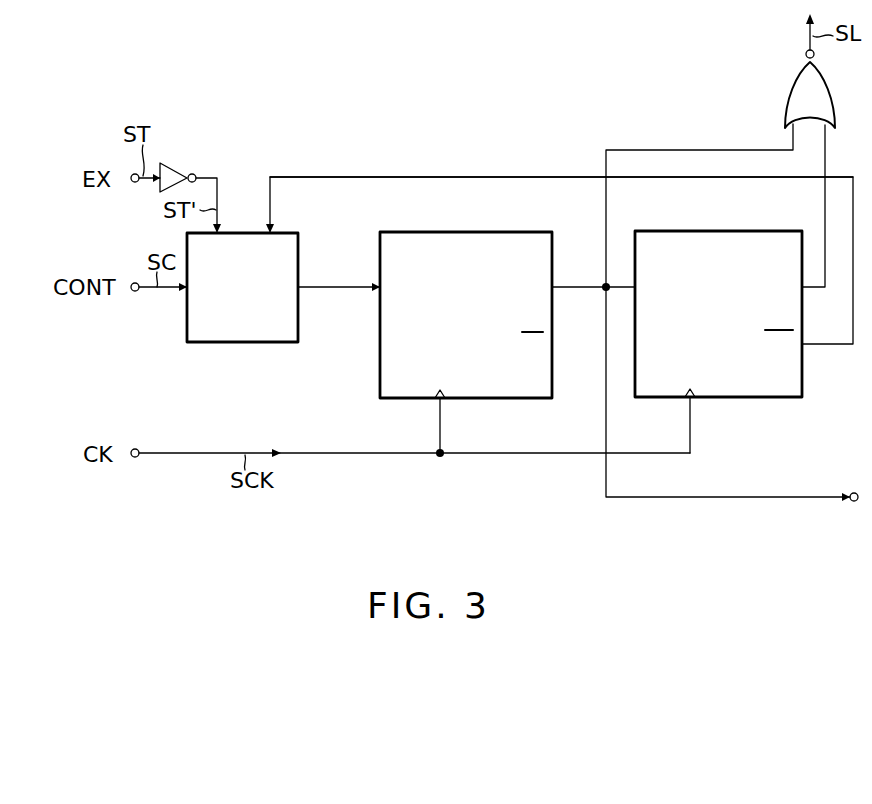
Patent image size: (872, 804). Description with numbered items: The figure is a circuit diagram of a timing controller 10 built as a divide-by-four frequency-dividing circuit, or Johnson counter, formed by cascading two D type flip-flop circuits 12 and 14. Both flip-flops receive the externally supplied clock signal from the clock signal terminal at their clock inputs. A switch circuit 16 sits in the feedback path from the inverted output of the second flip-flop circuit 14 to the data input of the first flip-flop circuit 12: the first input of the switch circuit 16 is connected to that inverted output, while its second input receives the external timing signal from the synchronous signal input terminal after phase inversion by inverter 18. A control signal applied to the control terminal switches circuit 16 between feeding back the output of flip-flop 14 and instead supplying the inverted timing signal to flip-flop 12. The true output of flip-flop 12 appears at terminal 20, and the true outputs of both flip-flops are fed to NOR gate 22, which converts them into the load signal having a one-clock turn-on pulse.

The timing controller 10 is at (358, 158).
The first D type flip-flop circuit 12 is at (466, 232).
The second D type flip-flop circuit 14 is at (715, 231).
The switch circuit 16 is at (233, 342).
The inverter 18 is at (172, 162).
The terminal 20 is at (854, 493).
The NOR gate 22 is at (783, 103).